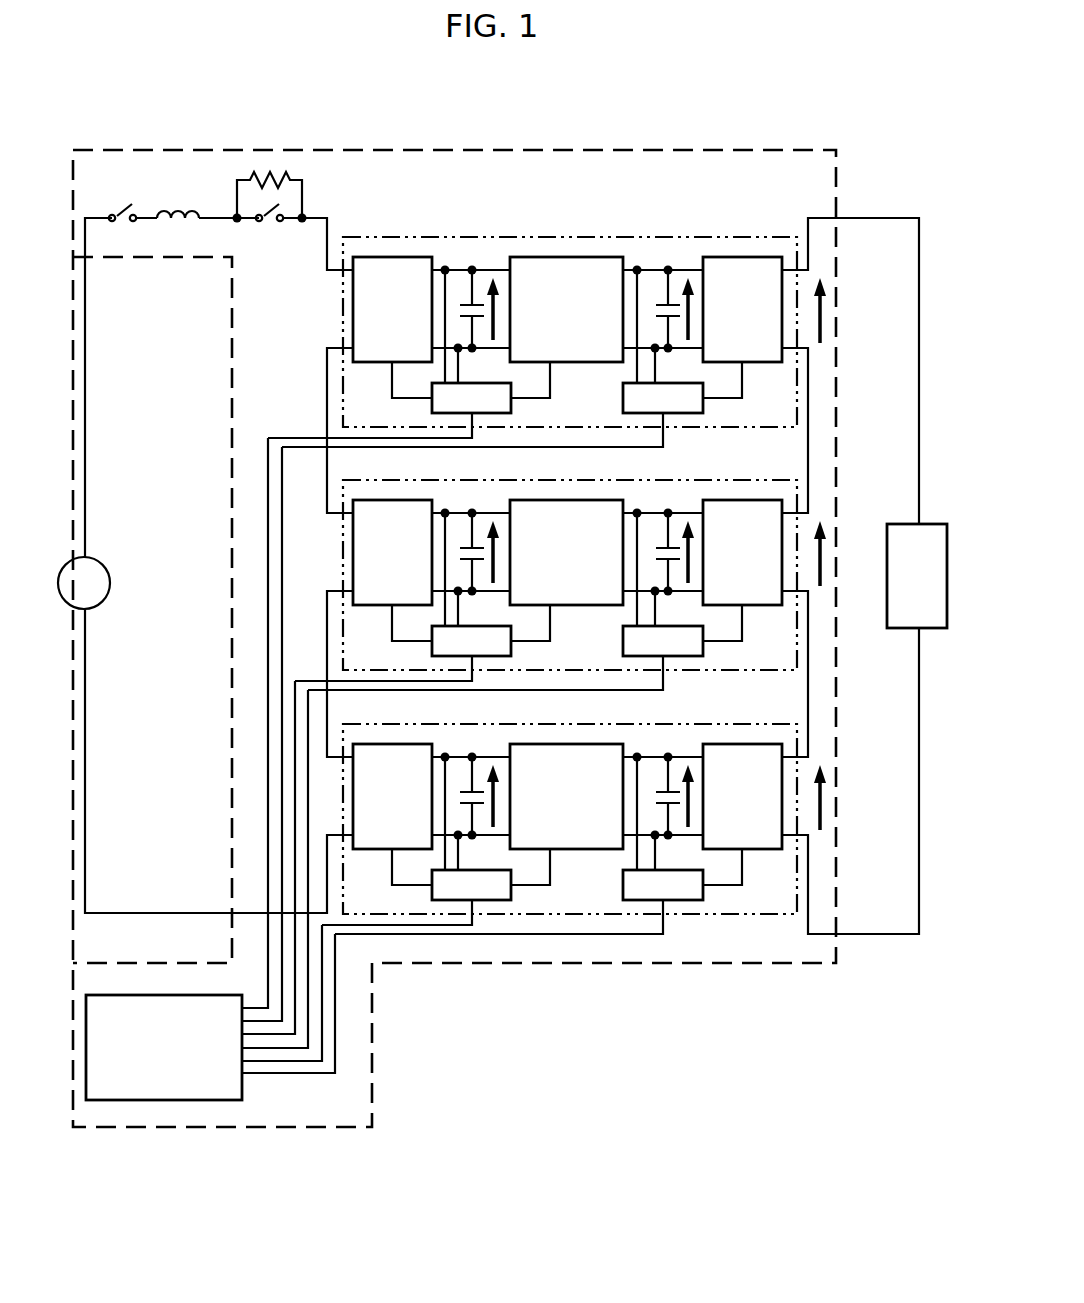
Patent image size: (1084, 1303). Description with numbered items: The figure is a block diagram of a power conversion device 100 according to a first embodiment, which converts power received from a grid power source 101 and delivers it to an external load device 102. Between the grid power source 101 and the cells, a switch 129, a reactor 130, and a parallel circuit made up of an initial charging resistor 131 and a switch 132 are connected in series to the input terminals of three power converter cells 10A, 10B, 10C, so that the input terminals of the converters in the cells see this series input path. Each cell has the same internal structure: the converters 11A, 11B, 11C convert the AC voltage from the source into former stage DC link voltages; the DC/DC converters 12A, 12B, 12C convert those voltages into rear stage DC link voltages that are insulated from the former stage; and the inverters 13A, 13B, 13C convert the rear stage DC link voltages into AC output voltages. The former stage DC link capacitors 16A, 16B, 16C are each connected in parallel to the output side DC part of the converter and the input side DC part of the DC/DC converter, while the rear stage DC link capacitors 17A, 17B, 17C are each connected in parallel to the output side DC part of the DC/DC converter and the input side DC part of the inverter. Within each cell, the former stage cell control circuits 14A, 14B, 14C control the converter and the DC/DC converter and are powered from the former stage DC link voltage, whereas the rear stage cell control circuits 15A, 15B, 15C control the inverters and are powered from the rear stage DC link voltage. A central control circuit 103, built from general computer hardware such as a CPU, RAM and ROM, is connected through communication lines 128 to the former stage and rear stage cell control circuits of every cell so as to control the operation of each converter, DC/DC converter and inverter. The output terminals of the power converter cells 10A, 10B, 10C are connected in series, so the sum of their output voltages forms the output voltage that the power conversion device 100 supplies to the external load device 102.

The power conversion device 100 is at (804, 148).
The grid power source 101 is at (66, 566).
The external load device 102 is at (912, 524).
The central control circuit 103 is at (165, 995).
The communication lines 128 is at (258, 1075).
The switch 129 is at (122, 210).
The reactor 130 is at (172, 208).
The initial charging resistor 131 is at (261, 175).
The switch 132 is at (266, 228).
The power converter cell 10A is at (714, 237).
The power converter cell 10B is at (714, 480).
The power converter cell 10C is at (714, 724).
The converter 11A is at (367, 257).
The converter 11B is at (367, 500).
The converter 11C is at (367, 744).
The DC/DC converter 12A is at (585, 257).
The DC/DC converter 12B is at (585, 500).
The DC/DC converter 12C is at (585, 744).
The inverter 13A is at (782, 262).
The inverter 13B is at (782, 505).
The inverter 13C is at (782, 749).
The former stage cell control circuit 14A is at (432, 408).
The former stage cell control circuit 14B is at (432, 651).
The former stage cell control circuit 14C is at (432, 895).
The rear stage cell control circuit 15A is at (623, 408).
The rear stage cell control circuit 15B is at (623, 651).
The rear stage cell control circuit 15C is at (623, 895).
The former stage DC link capacitor 16A is at (465, 303).
The former stage DC link capacitor 16B is at (465, 546).
The former stage DC link capacitor 16C is at (465, 790).
The rear stage DC link capacitor 17A is at (664, 303).
The rear stage DC link capacitor 17B is at (664, 546).
The rear stage DC link capacitor 17C is at (664, 790).